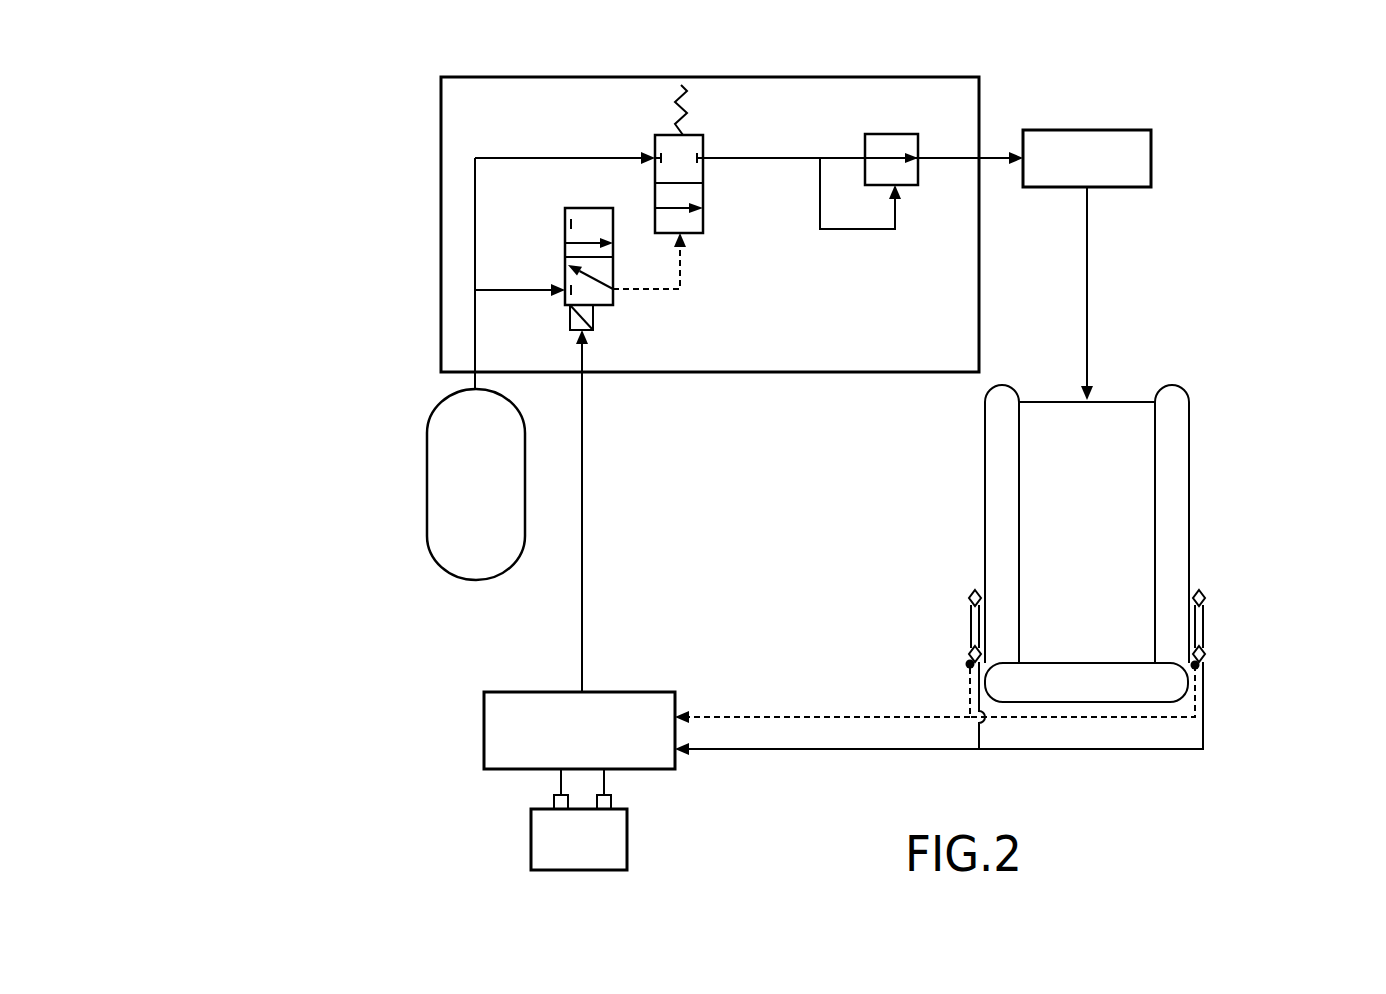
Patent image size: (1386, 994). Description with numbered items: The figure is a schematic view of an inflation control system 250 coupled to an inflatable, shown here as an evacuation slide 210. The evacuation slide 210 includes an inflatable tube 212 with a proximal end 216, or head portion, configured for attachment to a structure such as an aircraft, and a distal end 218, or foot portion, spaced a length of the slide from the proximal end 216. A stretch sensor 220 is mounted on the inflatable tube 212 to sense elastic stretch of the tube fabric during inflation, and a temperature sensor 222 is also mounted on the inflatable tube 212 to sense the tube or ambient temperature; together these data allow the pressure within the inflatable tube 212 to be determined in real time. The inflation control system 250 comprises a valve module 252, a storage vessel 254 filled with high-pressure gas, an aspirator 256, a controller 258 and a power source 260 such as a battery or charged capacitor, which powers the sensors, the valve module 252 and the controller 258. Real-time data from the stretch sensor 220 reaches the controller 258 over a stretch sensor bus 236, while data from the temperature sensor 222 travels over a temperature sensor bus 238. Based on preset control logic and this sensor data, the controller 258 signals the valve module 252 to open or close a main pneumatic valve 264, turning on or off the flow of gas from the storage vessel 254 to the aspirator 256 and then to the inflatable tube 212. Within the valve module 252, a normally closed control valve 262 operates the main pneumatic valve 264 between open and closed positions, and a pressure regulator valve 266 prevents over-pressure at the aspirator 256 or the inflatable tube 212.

The evacuation slide 210 is at (1242, 500).
The inflatable tube 212 is at (1172, 443).
The proximal end 216 is at (1125, 400).
The distal end 218 is at (1108, 682).
The stretch sensor 220 is at (1203, 625).
The temperature sensor 222 is at (1200, 665).
The stretch sensor bus 236 is at (826, 749).
The temperature sensor bus 238 is at (825, 717).
The inflation control system 250 is at (300, 170).
The valve module 252 is at (730, 372).
The storage vessel 254 is at (427, 466).
The aspirator 256 is at (1151, 157).
The controller 258 is at (484, 730).
The power source 260 is at (531, 838).
The normally closed control valve 262 is at (613, 305).
The main pneumatic valve 264 is at (703, 200).
The pressure regulator valve 266 is at (865, 140).